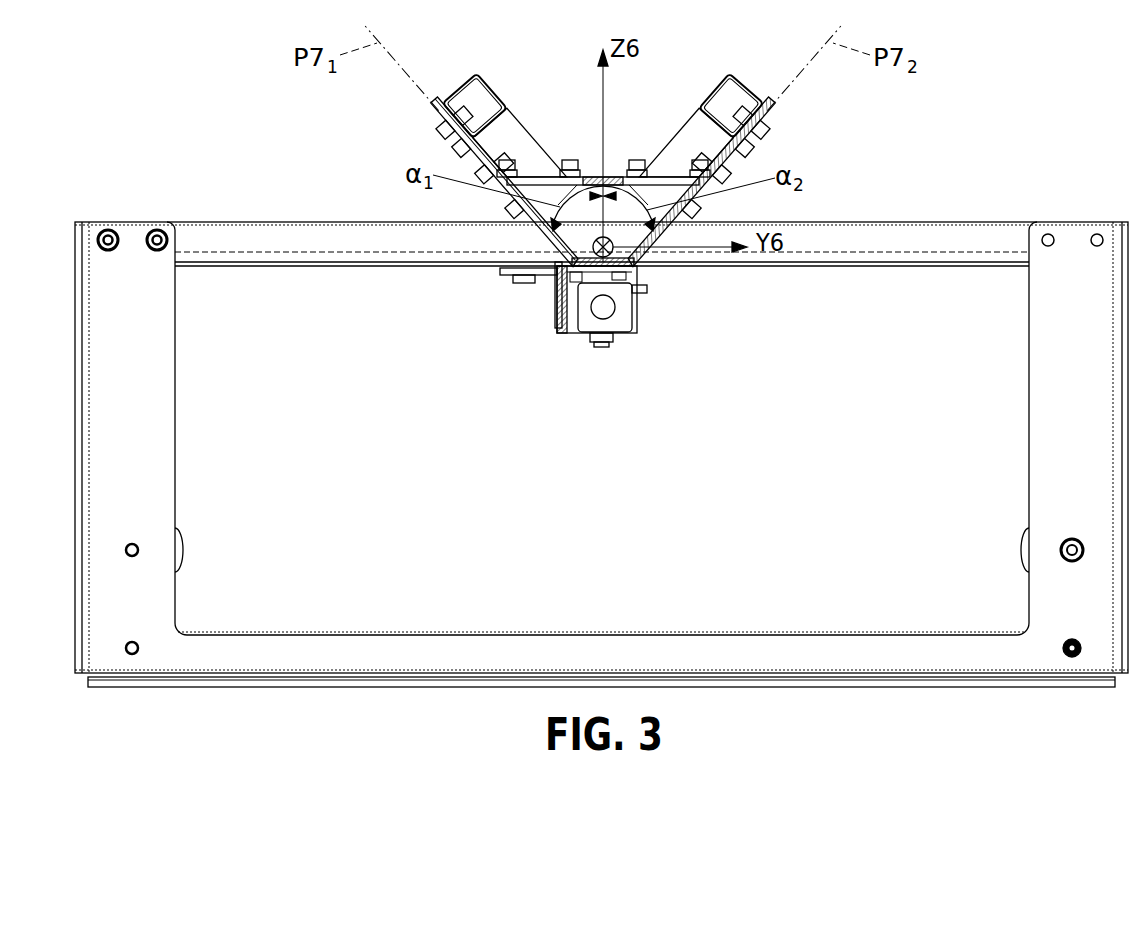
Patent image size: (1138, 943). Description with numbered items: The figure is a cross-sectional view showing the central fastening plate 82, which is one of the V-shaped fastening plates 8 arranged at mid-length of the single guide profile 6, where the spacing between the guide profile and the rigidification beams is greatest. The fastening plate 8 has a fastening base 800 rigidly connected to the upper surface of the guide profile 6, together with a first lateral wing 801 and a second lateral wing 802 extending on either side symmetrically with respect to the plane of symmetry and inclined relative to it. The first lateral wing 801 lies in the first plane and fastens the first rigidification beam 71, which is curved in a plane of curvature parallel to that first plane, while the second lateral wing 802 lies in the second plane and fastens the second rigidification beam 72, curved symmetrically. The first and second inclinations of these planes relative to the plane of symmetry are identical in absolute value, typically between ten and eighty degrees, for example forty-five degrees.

The guide profile 6 is at (627, 333).
The first rigidification beam 71 is at (490, 87).
The second rigidification beam 72 is at (712, 88).
The fastening plate 8 is at (658, 220).
The central plate 82 is at (658, 220).
The fastening base 800 is at (563, 327).
The first lateral wing 801 is at (553, 250).
The second lateral wing 802 is at (643, 250).